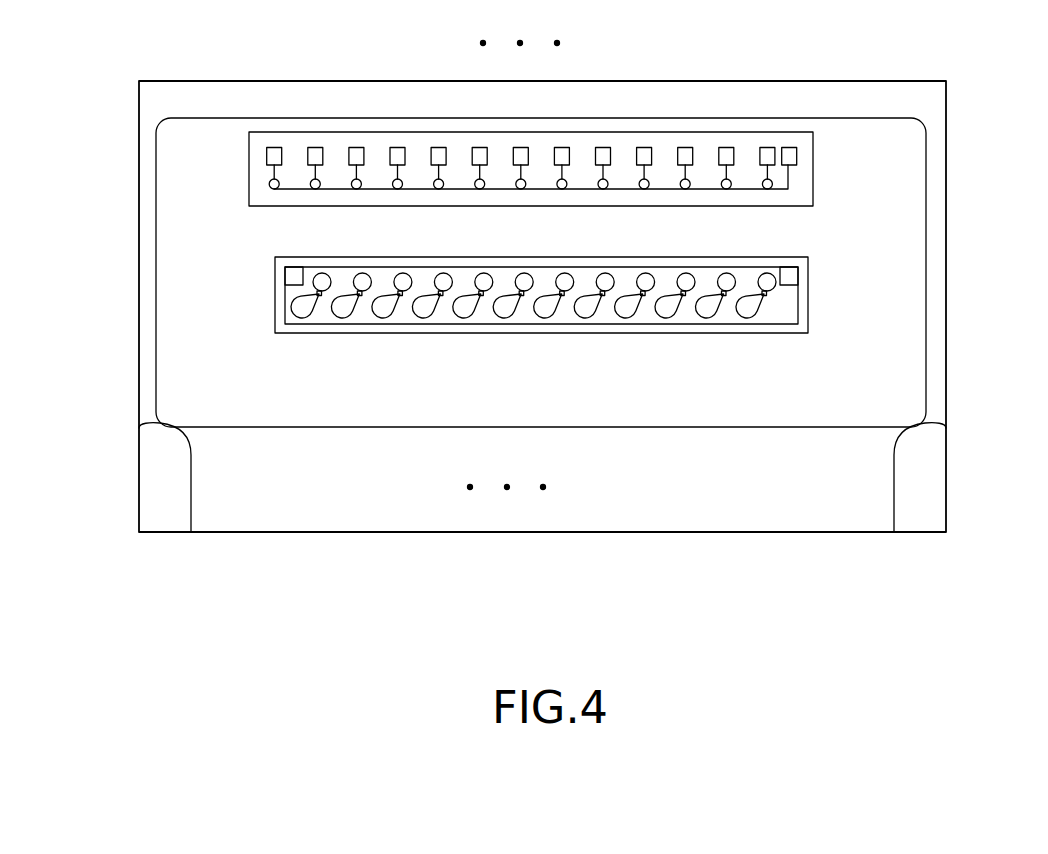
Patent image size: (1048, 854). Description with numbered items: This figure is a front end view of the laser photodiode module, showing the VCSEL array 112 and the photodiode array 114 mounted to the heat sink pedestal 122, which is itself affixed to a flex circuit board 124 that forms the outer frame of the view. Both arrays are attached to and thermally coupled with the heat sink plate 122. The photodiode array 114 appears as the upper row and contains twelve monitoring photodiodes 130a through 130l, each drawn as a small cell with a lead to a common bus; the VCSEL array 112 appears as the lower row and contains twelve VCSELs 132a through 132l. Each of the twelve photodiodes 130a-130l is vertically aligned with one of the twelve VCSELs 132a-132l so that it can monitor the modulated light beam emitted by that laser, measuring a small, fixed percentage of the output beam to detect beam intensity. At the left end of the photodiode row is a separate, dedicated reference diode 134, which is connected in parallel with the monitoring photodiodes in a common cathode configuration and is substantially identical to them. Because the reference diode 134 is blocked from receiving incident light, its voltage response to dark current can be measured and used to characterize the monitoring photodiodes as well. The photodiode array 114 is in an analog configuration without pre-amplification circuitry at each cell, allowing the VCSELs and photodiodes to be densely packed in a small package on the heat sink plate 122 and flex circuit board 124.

The VCSEL array 112 is at (795, 313).
The photodiode array 114 is at (272, 197).
The heat sink plate 122 is at (873, 237).
The flex circuit board 124 is at (147, 97).
The photodiode 130a is at (315, 146).
The photodiode 130l is at (764, 146).
The VCSEL 132a is at (300, 312).
The VCSEL 132l is at (742, 317).
The reference diode 134 is at (272, 146).